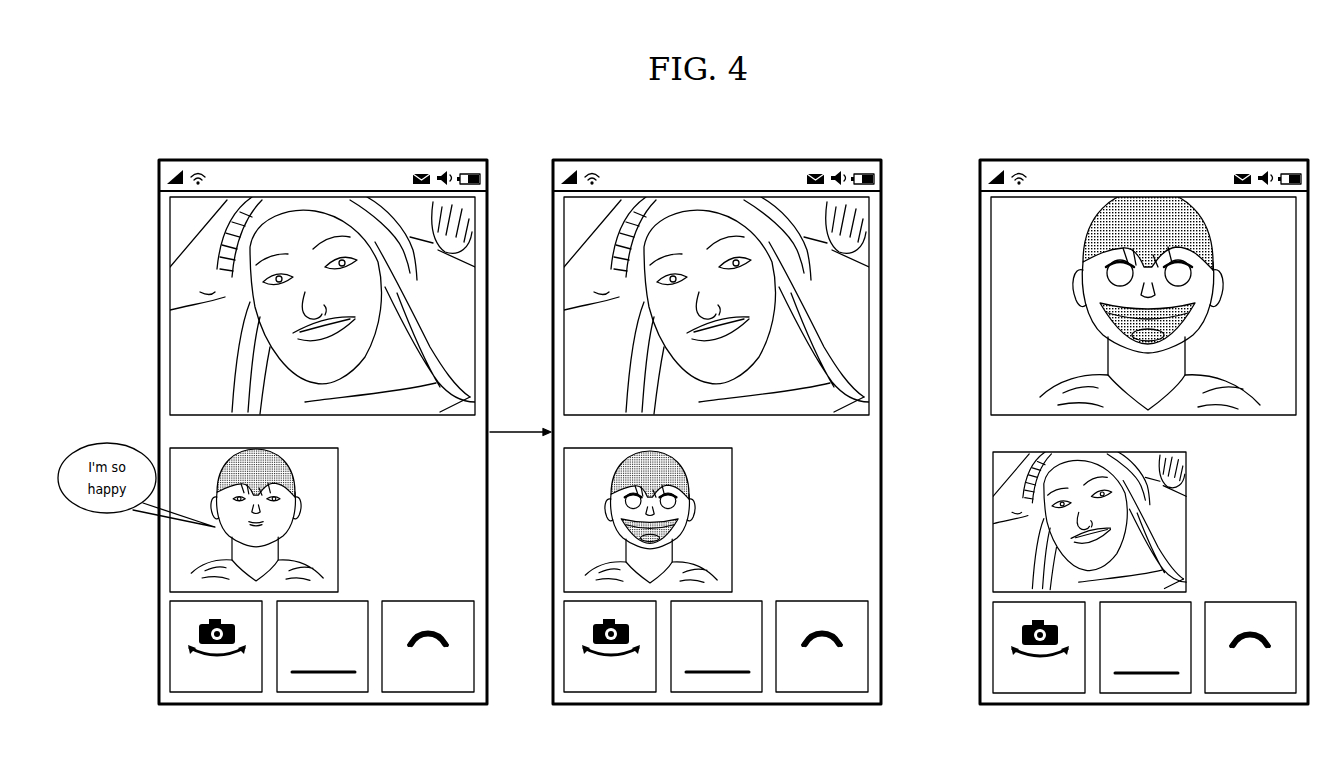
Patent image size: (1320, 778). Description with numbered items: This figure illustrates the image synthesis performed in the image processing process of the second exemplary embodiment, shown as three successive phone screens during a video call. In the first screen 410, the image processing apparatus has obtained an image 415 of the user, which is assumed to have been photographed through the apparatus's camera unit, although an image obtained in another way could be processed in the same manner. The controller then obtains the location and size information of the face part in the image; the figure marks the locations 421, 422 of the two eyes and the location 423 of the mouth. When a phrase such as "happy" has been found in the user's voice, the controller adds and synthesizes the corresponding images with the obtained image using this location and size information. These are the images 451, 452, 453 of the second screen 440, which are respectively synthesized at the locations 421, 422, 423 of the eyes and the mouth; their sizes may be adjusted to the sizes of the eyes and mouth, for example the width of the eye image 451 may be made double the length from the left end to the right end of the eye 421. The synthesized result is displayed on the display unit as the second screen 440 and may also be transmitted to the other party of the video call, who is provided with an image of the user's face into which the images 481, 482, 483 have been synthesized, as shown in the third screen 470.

The first screen 410 is at (226, 155).
The image 415 is at (169, 547).
The location of eye 421 is at (238, 499).
The location of eye 422 is at (276, 501).
The location of mouth 423 is at (258, 536).
The second screen 440 is at (603, 155).
The eye image 451 is at (633, 505).
The eye image 452 is at (668, 505).
The mouth image 453 is at (650, 540).
The third screen 470 is at (1040, 155).
The synthesized eye image 481 is at (1120, 262).
The synthesized eye image 482 is at (1178, 262).
The synthesized mouth image 483 is at (1150, 303).